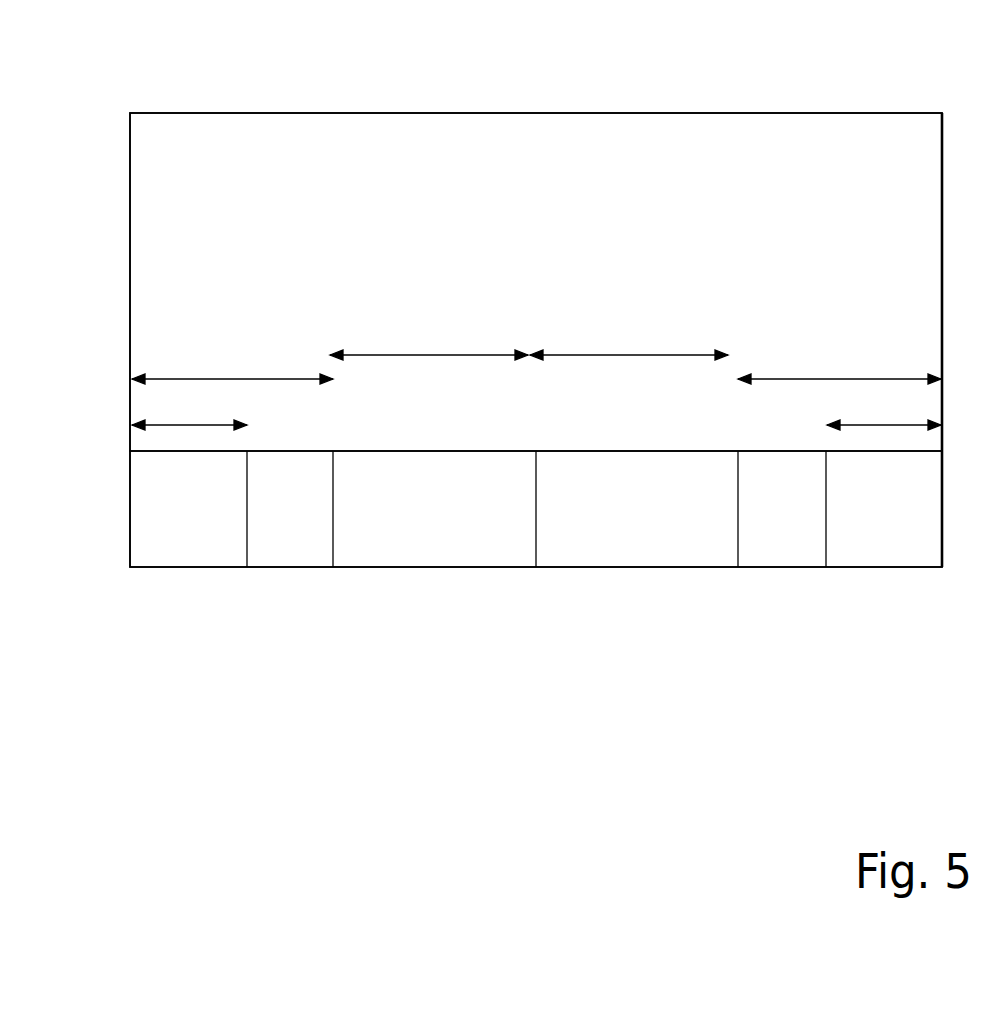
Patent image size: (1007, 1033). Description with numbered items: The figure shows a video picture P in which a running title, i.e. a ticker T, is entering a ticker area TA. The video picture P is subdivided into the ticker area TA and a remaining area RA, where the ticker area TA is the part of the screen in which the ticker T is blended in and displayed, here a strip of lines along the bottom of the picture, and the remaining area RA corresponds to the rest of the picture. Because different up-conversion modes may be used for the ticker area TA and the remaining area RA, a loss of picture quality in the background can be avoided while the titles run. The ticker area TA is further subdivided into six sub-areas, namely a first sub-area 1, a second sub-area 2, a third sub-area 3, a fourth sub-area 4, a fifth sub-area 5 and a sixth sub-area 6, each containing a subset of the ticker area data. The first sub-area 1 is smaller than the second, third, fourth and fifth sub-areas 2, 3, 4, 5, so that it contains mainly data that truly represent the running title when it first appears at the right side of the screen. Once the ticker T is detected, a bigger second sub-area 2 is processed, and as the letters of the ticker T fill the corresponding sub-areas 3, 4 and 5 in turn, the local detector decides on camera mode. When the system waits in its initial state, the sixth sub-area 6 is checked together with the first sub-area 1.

The video picture P is at (535, 113).
The remaining area RA is at (130, 113).
The ticker area TA is at (130, 451).
The ticker T is at (713, 532).
The first sub-area 1 is at (884, 425).
The second sub-area 2 is at (839, 379).
The third sub-area 3 is at (629, 355).
The fourth sub-area 4 is at (429, 355).
The fifth sub-area 5 is at (232, 379).
The sixth sub-area 6 is at (189, 425).